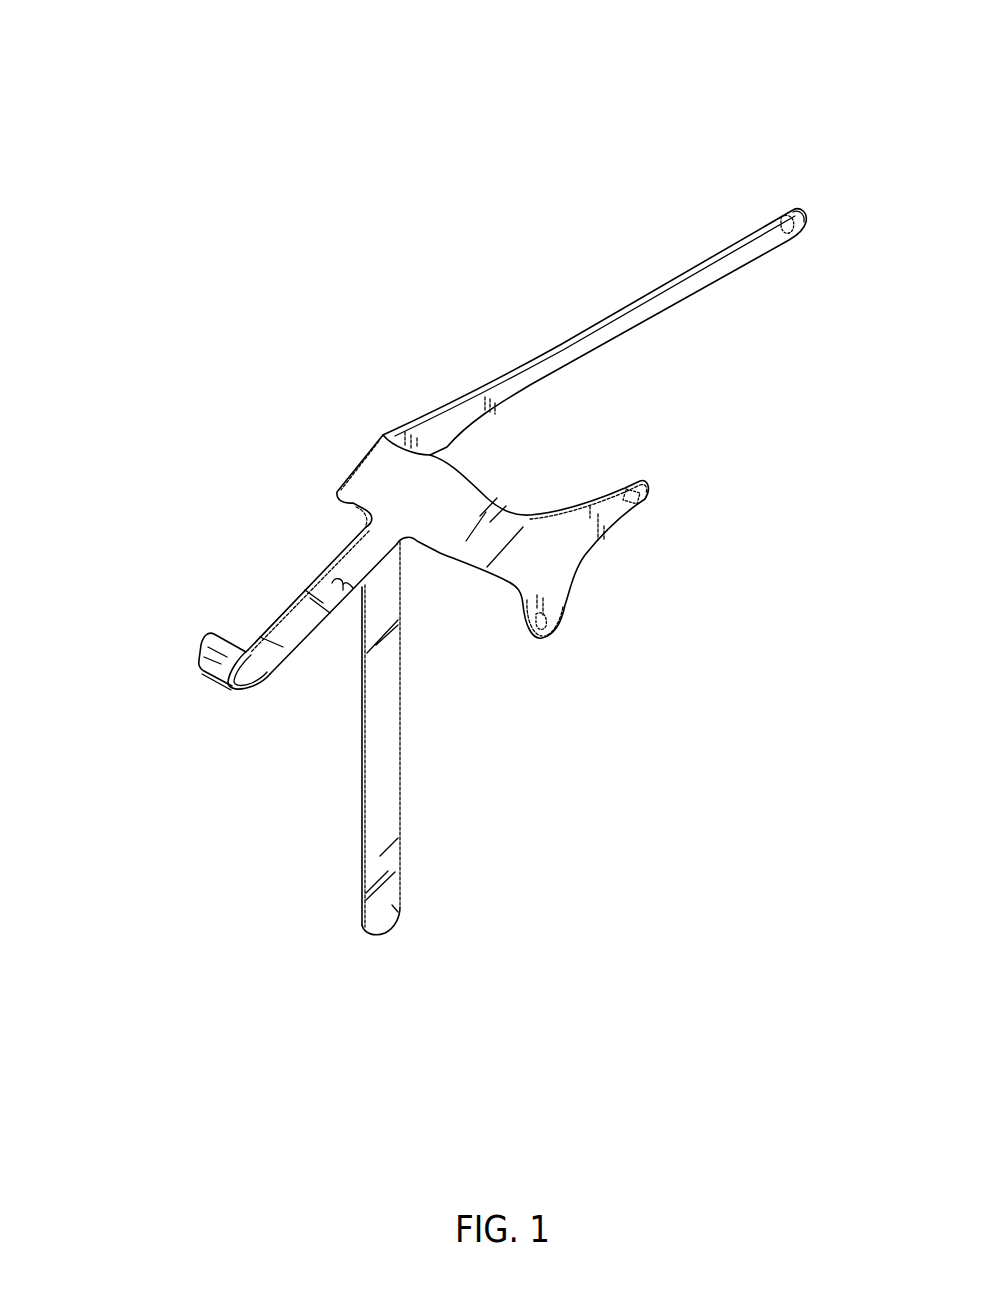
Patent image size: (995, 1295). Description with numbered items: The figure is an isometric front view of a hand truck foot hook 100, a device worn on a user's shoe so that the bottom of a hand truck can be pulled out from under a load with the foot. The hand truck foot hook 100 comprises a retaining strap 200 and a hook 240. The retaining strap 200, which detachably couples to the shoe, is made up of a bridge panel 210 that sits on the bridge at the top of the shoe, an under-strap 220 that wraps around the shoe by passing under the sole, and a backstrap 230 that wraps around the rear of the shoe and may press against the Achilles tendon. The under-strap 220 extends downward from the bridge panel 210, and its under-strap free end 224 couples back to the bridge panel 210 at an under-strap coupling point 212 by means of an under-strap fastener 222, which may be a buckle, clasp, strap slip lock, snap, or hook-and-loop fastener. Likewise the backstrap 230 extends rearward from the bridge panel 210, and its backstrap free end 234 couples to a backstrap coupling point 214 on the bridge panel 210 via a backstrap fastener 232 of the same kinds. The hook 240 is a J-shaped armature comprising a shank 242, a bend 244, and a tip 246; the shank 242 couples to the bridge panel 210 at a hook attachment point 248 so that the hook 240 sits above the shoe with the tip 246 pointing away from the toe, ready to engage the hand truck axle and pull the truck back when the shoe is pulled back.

The hand truck foot hook 100 is at (196, 105).
The retaining strap 200 is at (126, 236).
The bridge panel 210 is at (375, 482).
The under-strap coupling point 212 is at (547, 580).
The backstrap coupling point 214 is at (578, 517).
The under-strap 220 is at (390, 772).
The under-strap fastener 222 is at (547, 623).
The under-strap free end 224 is at (368, 933).
The backstrap 230 is at (603, 319).
The backstrap fastener 232 is at (793, 227).
The backstrap free end 234 is at (768, 222).
The hook 240 is at (303, 715).
The shank 242 is at (288, 630).
The bend 244 is at (210, 677).
The tip 246 is at (214, 634).
The hook attachment point 248 is at (343, 590).